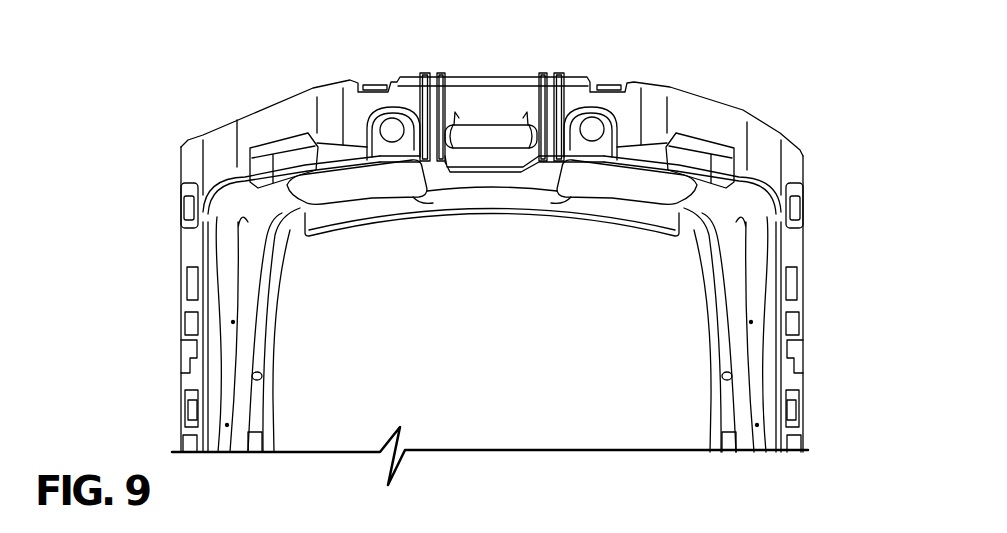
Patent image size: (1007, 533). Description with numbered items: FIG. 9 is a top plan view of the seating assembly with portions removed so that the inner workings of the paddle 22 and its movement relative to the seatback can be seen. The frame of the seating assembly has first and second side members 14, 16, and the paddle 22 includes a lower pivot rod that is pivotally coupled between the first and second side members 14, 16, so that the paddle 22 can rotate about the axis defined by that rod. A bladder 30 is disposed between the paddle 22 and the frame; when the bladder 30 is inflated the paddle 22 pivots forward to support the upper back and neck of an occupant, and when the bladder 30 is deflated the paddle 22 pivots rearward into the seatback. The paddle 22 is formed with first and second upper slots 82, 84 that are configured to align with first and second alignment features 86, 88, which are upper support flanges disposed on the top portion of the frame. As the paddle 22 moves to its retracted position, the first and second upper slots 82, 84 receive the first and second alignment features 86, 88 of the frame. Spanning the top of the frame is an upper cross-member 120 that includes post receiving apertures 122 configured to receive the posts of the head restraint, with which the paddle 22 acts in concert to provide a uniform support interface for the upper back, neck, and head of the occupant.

The first side member 14 is at (203, 252).
The second side member 16 is at (787, 253).
The paddle 22 is at (497, 203).
The bladder 30 is at (615, 187).
The first upper slot 82 is at (432, 204).
The second upper slot 84 is at (562, 204).
The first alignment feature 86 is at (443, 76).
The second alignment feature 88 is at (562, 78).
The upper cross-member 120 is at (330, 103).
The post receiving apertures 122 is at (387, 122).